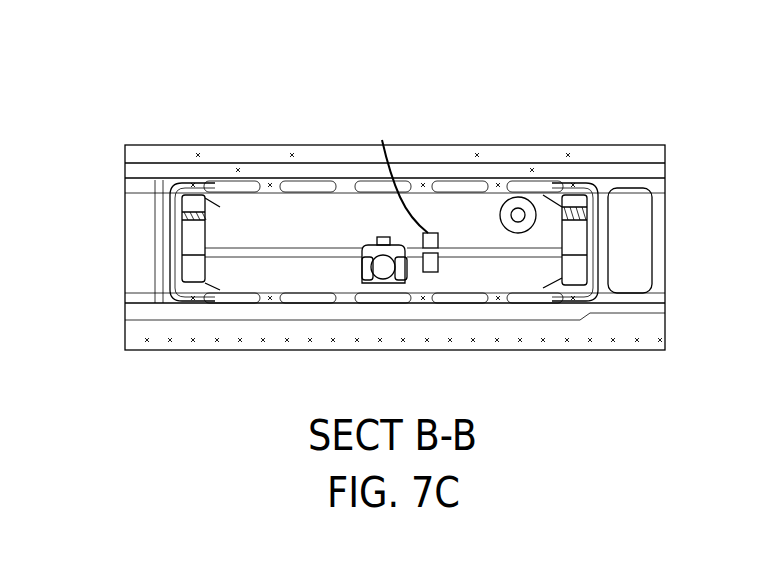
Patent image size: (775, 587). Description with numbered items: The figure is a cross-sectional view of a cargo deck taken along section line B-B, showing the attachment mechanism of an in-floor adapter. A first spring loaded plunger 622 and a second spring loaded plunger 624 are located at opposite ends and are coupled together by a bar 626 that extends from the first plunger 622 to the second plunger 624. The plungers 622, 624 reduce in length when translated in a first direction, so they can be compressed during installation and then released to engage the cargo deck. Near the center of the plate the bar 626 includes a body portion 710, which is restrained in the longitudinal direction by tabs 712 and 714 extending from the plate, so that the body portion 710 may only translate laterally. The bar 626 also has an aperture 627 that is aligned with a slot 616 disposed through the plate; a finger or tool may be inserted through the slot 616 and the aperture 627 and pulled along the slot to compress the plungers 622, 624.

The slot 616 is at (380, 140).
The first spring loaded plunger 622 is at (568, 240).
The second spring loaded plunger 624 is at (168, 245).
The bar 626 is at (287, 250).
The aperture 627 is at (438, 245).
The body portion 710 is at (377, 243).
The tab 712 is at (357, 277).
The tab 714 is at (407, 270).